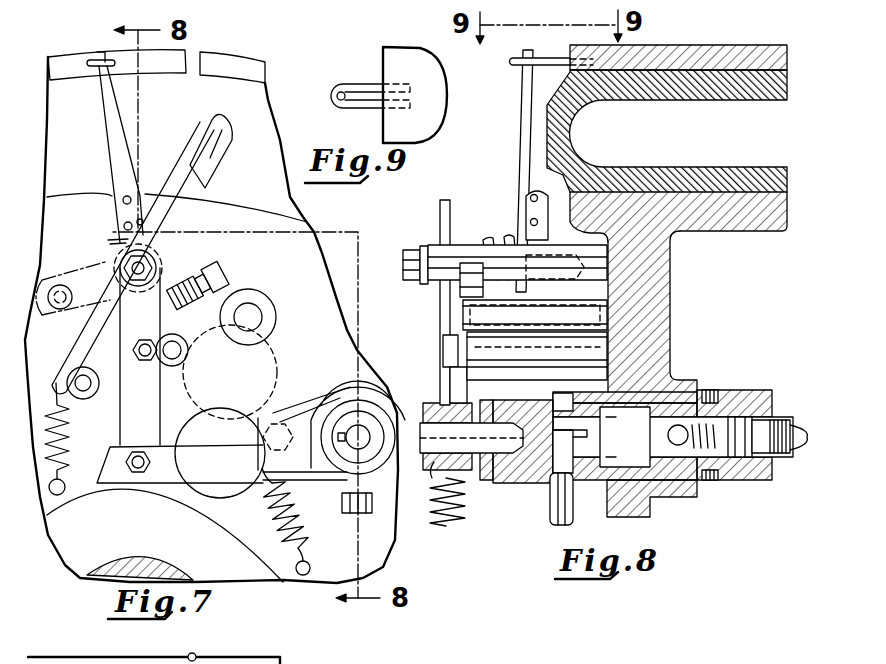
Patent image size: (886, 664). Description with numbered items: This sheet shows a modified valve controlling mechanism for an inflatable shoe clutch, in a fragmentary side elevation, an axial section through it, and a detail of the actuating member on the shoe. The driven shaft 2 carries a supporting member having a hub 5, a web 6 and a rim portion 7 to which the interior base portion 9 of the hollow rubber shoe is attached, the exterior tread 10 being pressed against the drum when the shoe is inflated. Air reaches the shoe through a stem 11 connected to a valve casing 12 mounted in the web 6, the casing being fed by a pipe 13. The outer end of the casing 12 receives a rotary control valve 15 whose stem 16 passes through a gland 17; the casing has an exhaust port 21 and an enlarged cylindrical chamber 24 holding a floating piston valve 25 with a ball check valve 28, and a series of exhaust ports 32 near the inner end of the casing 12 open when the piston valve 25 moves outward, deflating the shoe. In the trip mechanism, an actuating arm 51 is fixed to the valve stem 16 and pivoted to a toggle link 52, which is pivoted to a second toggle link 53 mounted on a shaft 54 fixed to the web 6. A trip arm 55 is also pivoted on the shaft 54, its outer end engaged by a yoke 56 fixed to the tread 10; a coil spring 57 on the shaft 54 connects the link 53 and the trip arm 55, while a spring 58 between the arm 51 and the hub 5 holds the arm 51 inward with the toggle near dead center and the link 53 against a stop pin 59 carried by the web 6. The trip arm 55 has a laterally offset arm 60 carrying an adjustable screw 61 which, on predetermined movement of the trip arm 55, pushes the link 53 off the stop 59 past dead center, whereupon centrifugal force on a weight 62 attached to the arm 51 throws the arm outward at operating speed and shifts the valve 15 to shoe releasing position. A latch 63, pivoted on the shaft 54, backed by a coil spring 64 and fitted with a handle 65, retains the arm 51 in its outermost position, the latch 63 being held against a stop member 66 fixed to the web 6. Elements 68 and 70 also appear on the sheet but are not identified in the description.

In FIG. 7, the driven shaft 2 is at (131, 561).
In FIG. 7, the hub 5 is at (216, 572).
In FIG. 7, the web 6 is at (297, 312).
In FIG. 8, the web 6 is at (672, 313).
In FIG. 8, the rim portion 7 is at (770, 231).
In FIG. 8, the interior base portion 9 is at (731, 173).
In FIG. 7, the exterior tread 10 is at (75, 55).
In FIG. 8, the exterior tread 10 is at (695, 50).
In FIG. 8, the stem 11 is at (800, 404).
In FIG. 8, the valve casing 12 is at (736, 481).
In FIG. 8, the pipe 13 is at (553, 520).
In FIG. 8, the rotary control valve 15 is at (538, 483).
In FIG. 7, the valve stem 16 is at (363, 400).
In FIG. 8, the valve stem 16 is at (471, 438).
In FIG. 8, the gland 17 is at (485, 480).
In FIG. 8, the exhaust port 21 is at (563, 397).
In FIG. 8, the enlarged cylindrical chamber 24 is at (625, 437).
In FIG. 8, the floating piston valve 25 is at (730, 400).
In FIG. 8, the ball check valve 28 is at (668, 435).
In FIG. 8, the exhaust ports 32 is at (708, 398).
In FIG. 7, the actuating arm 51 is at (293, 378).
In FIG. 8, the actuating arm 51 is at (422, 405).
In FIG. 7, the toggle link 52 is at (120, 417).
In FIG. 8, the toggle link 52 is at (440, 352).
In FIG. 7, the second toggle link 53 is at (158, 340).
In FIG. 8, the second toggle link 53 is at (460, 317).
In FIG. 7, the shaft 54 is at (122, 267).
In FIG. 8, the shaft 54 is at (403, 266).
In FIG. 7, the trip arm 55 is at (118, 138).
In FIG. 9, the trip arm 55 is at (342, 104).
In FIG. 8, the trip arm 55 is at (524, 147).
In FIG. 7, the yoke 56 is at (98, 70).
In FIG. 9, the yoke 56 is at (358, 83).
In FIG. 8, the yoke 56 is at (520, 62).
In FIG. 7, the coil spring 57 is at (105, 242).
In FIG. 8, the coil spring 57 is at (500, 225).
In FIG. 7, the spring 58 is at (312, 543).
In FIG. 8, the spring 58 is at (463, 520).
In FIG. 7, the stop pin 59 is at (182, 352).
In FIG. 8, the stop pin 59 is at (527, 352).
In FIG. 7, the laterally offset arm 60 is at (178, 278).
In FIG. 8, the laterally offset arm 60 is at (532, 267).
In FIG. 7, the screw 61 is at (228, 296).
In FIG. 8, the screw 61 is at (470, 262).
In FIG. 7, the weight 62 is at (287, 338).
In FIG. 8, the weight 62 is at (432, 478).
In FIG. 7, the latch 63 is at (68, 358).
In FIG. 7, the coil spring 64 is at (44, 463).
In FIG. 7, the handle 65 is at (207, 160).
In FIG. 8, the handle 65 is at (440, 210).
In FIG. 7, the stop member 66 is at (87, 396).
In FIG. 8, the stop member 66 is at (443, 367).
In FIG. 7, the guide 68 is at (403, 663).
In FIG. 7, the pivot 70 is at (444, 663).